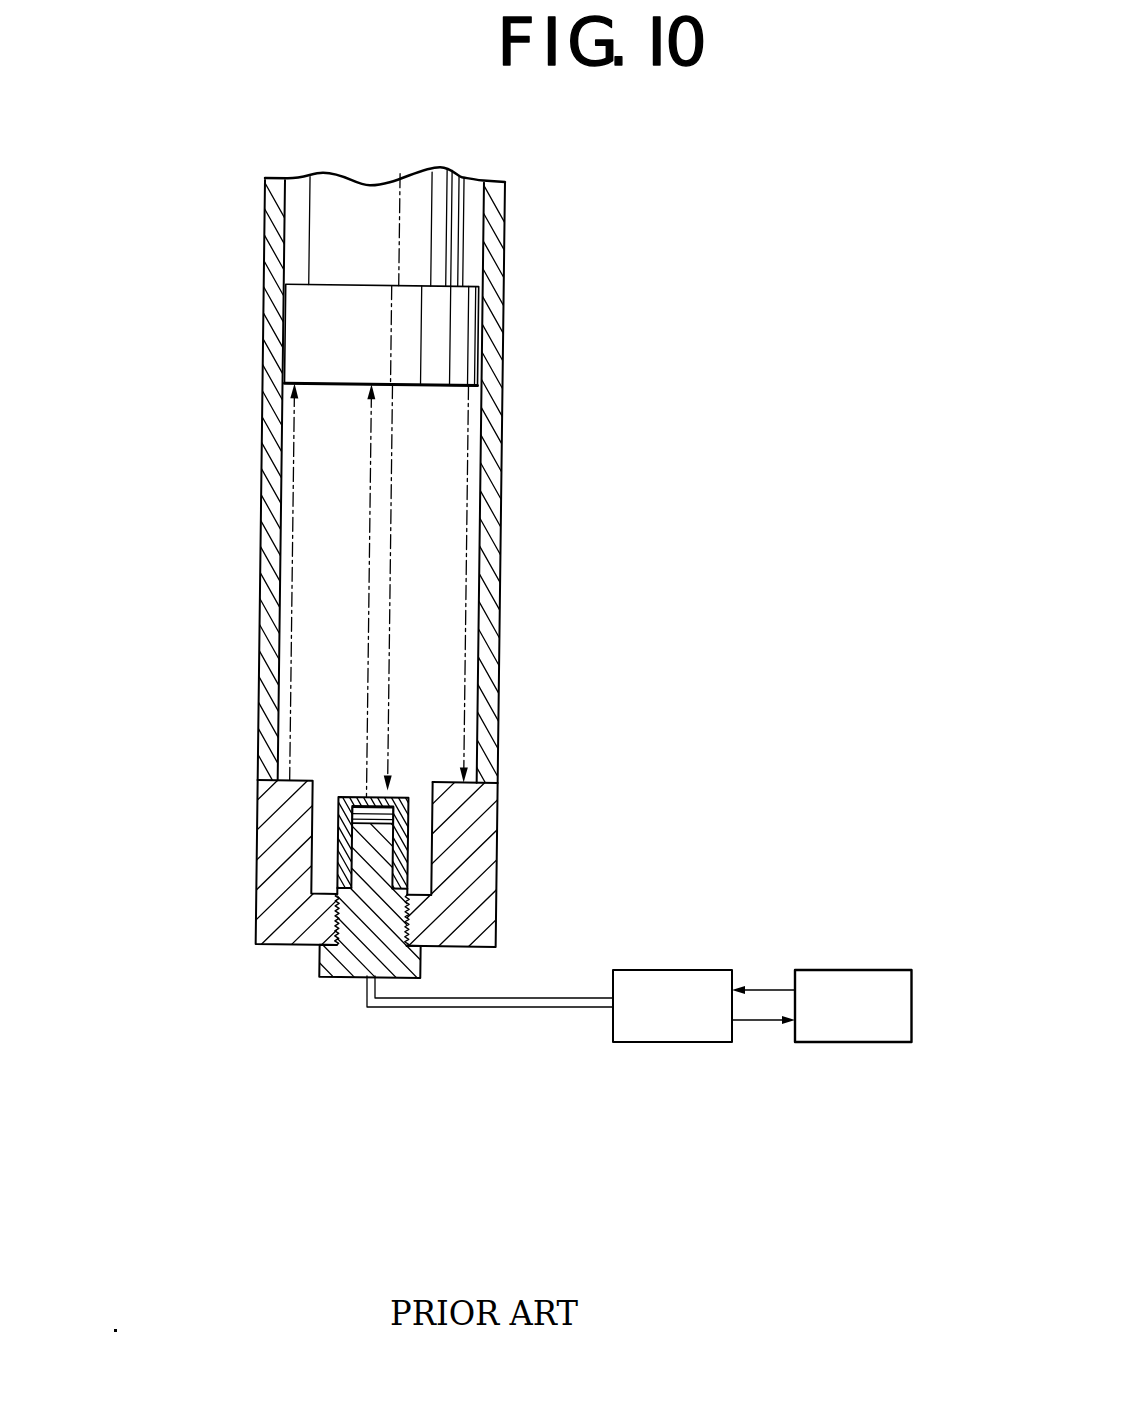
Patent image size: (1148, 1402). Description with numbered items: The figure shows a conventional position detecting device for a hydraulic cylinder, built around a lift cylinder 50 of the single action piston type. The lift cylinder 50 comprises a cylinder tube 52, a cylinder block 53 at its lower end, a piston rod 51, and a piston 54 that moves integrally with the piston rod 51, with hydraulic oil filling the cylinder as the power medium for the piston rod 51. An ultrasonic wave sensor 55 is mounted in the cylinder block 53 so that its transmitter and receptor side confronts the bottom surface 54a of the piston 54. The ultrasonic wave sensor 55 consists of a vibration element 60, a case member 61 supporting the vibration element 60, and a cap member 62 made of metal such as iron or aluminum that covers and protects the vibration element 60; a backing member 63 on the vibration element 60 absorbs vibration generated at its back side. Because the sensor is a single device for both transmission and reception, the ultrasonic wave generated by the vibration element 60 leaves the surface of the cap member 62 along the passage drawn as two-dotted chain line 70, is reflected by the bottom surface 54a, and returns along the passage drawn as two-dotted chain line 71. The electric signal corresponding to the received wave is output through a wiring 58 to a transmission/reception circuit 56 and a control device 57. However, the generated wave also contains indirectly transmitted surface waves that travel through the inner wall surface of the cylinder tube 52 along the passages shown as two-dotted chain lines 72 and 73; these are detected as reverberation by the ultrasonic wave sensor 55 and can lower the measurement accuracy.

The lift cylinder 50 is at (540, 203).
The piston rod 51 is at (438, 232).
The cylinder tube 52 is at (267, 557).
The cylinder block 53 is at (282, 832).
The piston 54 is at (442, 333).
The bottom surface 54a is at (433, 385).
The ultrasonic wave sensor 55 is at (412, 768).
The transmission/reception circuit 56 is at (668, 1028).
The control device 57 is at (847, 1028).
The wiring 58 is at (467, 1008).
The vibration element 60 is at (395, 811).
The case member 61 is at (363, 880).
The cap member 62 is at (403, 797).
The backing member 63 is at (405, 821).
The two-dotted chain line 70 is at (368, 498).
The two-dotted chain line 71 is at (395, 497).
The two-dotted chain line 72 is at (295, 630).
The two-dotted chain line 73 is at (465, 622).